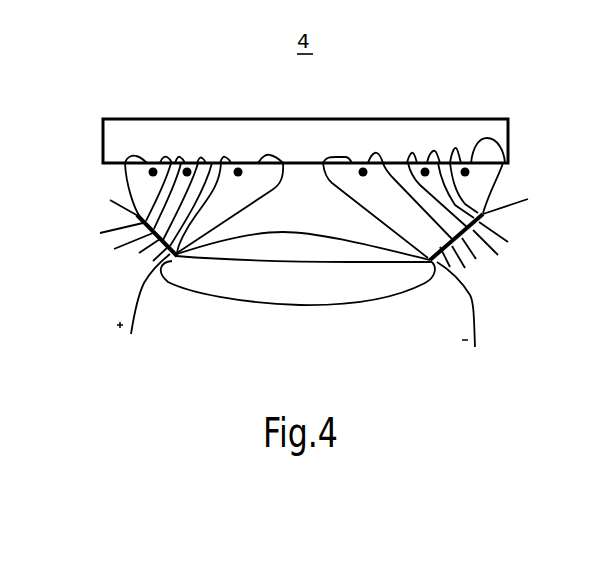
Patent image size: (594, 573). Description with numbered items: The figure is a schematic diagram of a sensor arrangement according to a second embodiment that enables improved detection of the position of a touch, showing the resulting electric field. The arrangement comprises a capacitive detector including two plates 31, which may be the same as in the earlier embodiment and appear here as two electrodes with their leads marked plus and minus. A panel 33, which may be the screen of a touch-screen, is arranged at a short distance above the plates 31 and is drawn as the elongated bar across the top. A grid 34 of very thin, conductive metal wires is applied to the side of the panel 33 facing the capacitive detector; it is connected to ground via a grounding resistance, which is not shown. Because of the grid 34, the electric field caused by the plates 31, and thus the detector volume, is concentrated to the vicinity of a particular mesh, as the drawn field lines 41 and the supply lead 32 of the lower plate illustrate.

The plates 31 is at (445, 260).
The positive supply lead 32 is at (137, 322).
The panel 33 is at (508, 127).
The grid 34 is at (463, 163).
The electric field lines 41 is at (492, 186).